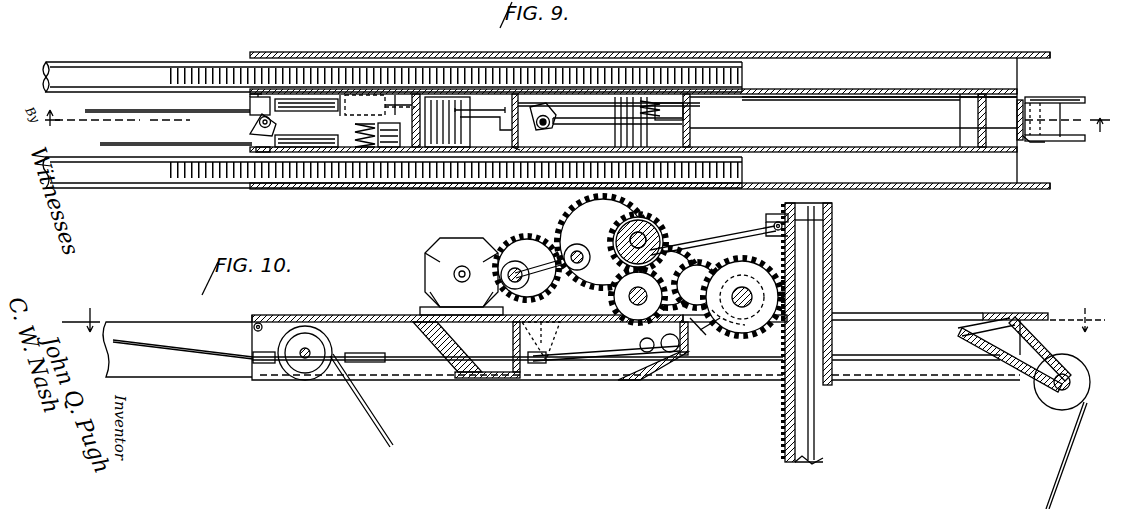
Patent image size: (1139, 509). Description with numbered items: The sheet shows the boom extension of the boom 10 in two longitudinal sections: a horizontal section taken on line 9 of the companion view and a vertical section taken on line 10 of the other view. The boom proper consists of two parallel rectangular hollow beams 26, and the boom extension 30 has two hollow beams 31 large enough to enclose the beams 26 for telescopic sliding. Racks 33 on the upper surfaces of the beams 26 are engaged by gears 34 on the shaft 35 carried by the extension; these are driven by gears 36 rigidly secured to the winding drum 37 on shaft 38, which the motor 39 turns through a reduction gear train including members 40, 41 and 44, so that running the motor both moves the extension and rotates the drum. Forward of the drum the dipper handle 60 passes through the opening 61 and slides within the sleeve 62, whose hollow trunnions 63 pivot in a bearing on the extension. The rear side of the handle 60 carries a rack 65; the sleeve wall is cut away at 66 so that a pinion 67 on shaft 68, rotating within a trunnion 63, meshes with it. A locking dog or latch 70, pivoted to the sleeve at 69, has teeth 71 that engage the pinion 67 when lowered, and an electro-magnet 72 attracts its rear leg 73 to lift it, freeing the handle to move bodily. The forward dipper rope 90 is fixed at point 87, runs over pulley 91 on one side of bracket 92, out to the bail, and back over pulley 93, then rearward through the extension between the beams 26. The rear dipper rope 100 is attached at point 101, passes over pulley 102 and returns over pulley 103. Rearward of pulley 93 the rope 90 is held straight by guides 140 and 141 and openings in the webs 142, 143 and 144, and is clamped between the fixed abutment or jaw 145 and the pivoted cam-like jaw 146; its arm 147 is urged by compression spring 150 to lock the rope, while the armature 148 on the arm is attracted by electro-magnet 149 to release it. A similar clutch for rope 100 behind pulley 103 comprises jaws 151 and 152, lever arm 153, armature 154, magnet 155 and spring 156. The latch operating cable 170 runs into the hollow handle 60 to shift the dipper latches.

In FIG. 10, the section line 9— 9 is at (584, 320).
In FIG. 9, the boom 10 is at (576, 121).
In FIG. 9, the hollow beams 26 is at (135, 62).
In FIG. 10, the hollow beams 26 is at (182, 372).
In FIG. 10, the boom extension 30 is at (312, 315).
In FIG. 9, the hollow beams 31 is at (760, 48).
In FIG. 9, the racks 33 is at (190, 68).
In FIG. 10, the gears 34 is at (614, 292).
In FIG. 10, the shaft 35 is at (690, 292).
In FIG. 10, the gears 36 is at (682, 248).
In FIG. 10, the winding drum 37 is at (650, 238).
In FIG. 10, the shaft 38 is at (660, 232).
In FIG. 10, the motor 39 is at (440, 246).
In FIG. 10, the reduction gear train member 40 is at (596, 213).
In FIG. 10, the reduction gear train member 41 is at (573, 250).
In FIG. 10, the reduction gear train member 44 is at (506, 242).
In FIG. 10, the dipper handle 60 is at (832, 410).
In FIG. 9, the opening 61 is at (838, 98).
In FIG. 10, the sleeve 62 is at (832, 222).
In FIG. 10, the hollow trunnions 63 is at (720, 290).
In FIG. 10, the rack 65 is at (783, 404).
In FIG. 10, the cut-away 66 is at (785, 368).
In FIG. 10, the pinion 67 is at (704, 333).
In FIG. 10, the shaft 68 is at (738, 318).
In FIG. 10, the pivot 69 is at (795, 243).
In FIG. 10, the locking dog or latch 70 is at (742, 232).
In FIG. 10, the teeth 71 is at (742, 288).
In FIG. 10, the electro-magnet 72 is at (790, 218).
In FIG. 10, the rear leg 73 is at (776, 222).
In FIG. 9, the attachment point 87 is at (1032, 142).
In FIG. 9, the forward dipper rope 90 is at (142, 112).
In FIG. 10, the forward dipper rope 90 is at (430, 362).
In FIG. 9, the pulley 91 is at (1085, 142).
In FIG. 9, the bracket 92 is at (1062, 110).
In FIG. 10, the bracket 92 is at (1012, 385).
In FIG. 9, the pulley 93 is at (1063, 97).
In FIG. 10, the pulley 93 is at (1050, 400).
In FIG. 9, the dipper rope 100 is at (170, 145).
In FIG. 10, the dipper rope 100 is at (385, 440).
In FIG. 9, the attachment point 101 is at (254, 90).
In FIG. 10, the attachment point 101 is at (253, 328).
In FIG. 9, the pulley 102 is at (298, 98).
In FIG. 10, the pulley 102 is at (308, 372).
In FIG. 9, the pulley 103 is at (325, 150).
In FIG. 9, the guide 140 is at (250, 104).
In FIG. 10, the guide 140 is at (272, 365).
In FIG. 9, the guide 141 is at (372, 95).
In FIG. 10, the guide 141 is at (382, 365).
In FIG. 9, the web 142 is at (447, 150).
In FIG. 10, the web 142 is at (465, 378).
In FIG. 9, the web 143 is at (516, 150).
In FIG. 10, the web 143 is at (516, 380).
In FIG. 9, the web 144 is at (700, 106).
In FIG. 10, the web 144 is at (648, 378).
In FIG. 9, the abutment or jaw 145 is at (560, 103).
In FIG. 9, the pivoted cam-like jaw 146 is at (552, 126).
In FIG. 9, the arm 147 is at (608, 116).
In FIG. 10, the arm 147 is at (570, 362).
In FIG. 9, the armature 148 is at (685, 118).
In FIG. 10, the armature 148 is at (665, 337).
In FIG. 9, the electro-magnet 149 is at (668, 100).
In FIG. 9, the compression spring 150 is at (640, 96).
In FIG. 10, the compression spring 150 is at (640, 344).
In FIG. 9, the jaw 151 is at (262, 154).
In FIG. 9, the jaw 152 is at (250, 130).
In FIG. 9, the lever arm 153 is at (340, 95).
In FIG. 9, the armature 154 is at (403, 96).
In FIG. 9, the magnet 155 is at (392, 150).
In FIG. 9, the spring 156 is at (365, 150).
In FIG. 10, the latch operating cable 170 is at (812, 288).